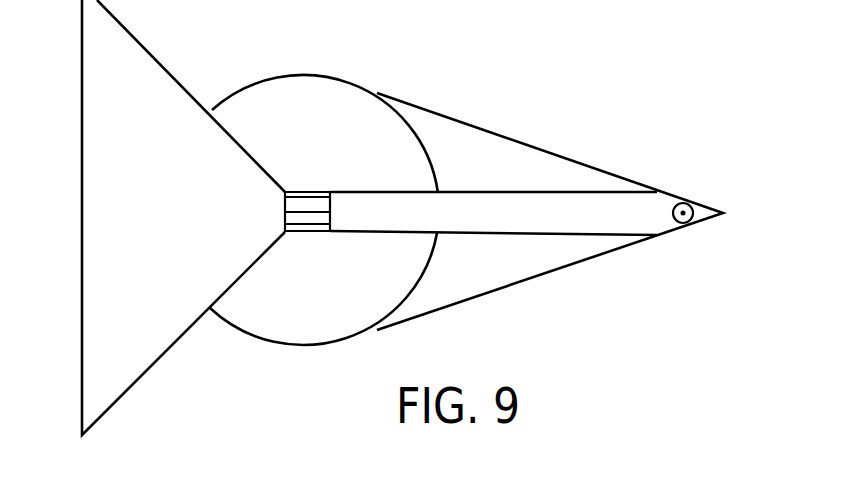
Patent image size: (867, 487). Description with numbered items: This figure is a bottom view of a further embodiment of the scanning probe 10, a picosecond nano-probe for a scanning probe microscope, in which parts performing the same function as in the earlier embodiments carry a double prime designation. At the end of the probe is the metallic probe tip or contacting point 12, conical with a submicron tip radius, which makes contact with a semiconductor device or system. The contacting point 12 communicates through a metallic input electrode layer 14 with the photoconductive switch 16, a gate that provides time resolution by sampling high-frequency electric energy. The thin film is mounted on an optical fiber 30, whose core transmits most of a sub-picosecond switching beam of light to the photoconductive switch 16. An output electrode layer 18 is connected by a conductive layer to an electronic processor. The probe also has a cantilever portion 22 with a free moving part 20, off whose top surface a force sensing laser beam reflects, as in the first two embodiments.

The scanning probe 10 is at (677, 85).
The probe tip or contacting point 12 is at (690, 204).
The input electrode layer 14 is at (507, 192).
The photoconductive switch 16 is at (312, 186).
The output electrode layer 18 is at (268, 157).
The free moving part 20 is at (708, 220).
The cantilever portion 22 is at (470, 120).
The optical fiber 30 is at (332, 75).